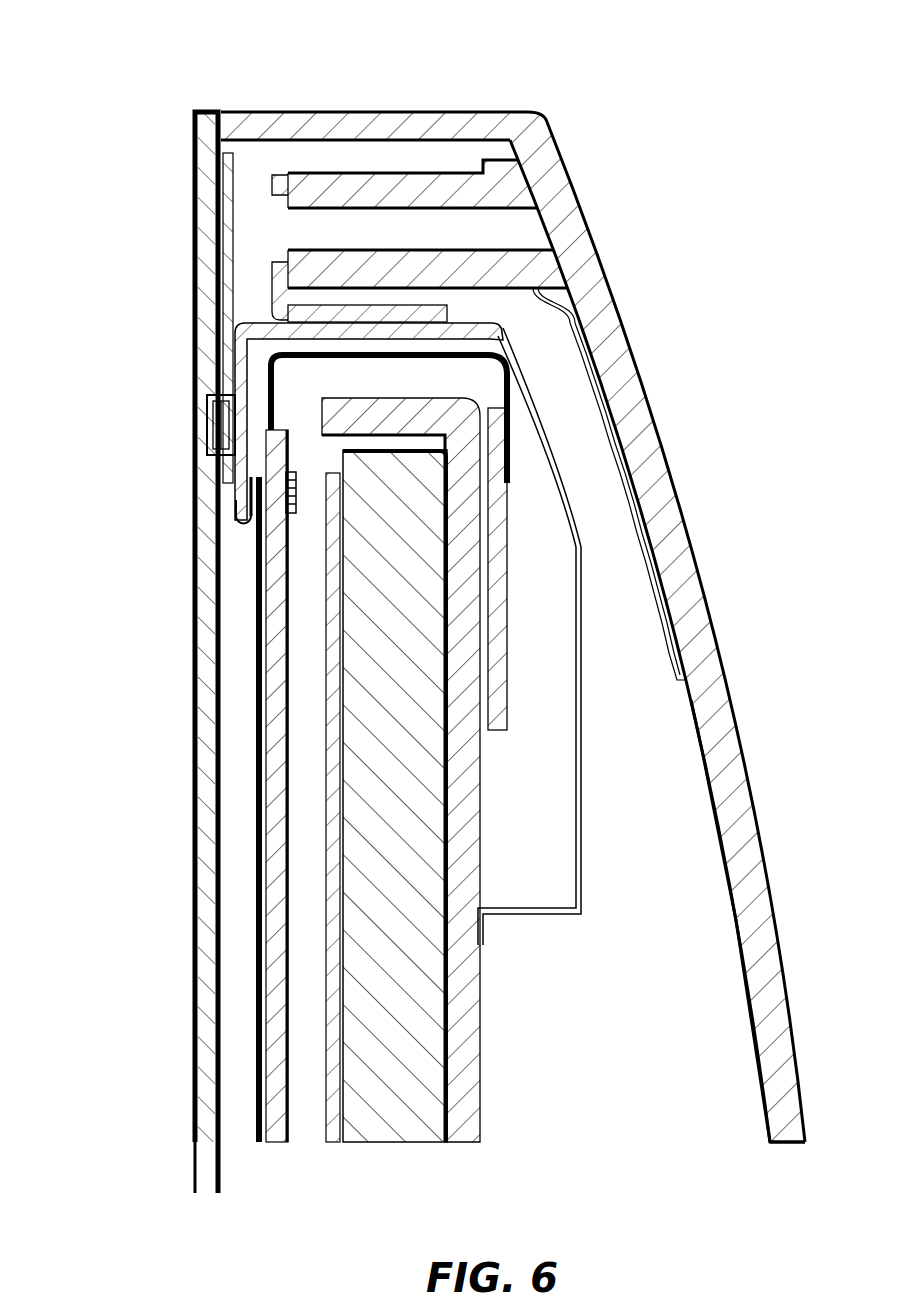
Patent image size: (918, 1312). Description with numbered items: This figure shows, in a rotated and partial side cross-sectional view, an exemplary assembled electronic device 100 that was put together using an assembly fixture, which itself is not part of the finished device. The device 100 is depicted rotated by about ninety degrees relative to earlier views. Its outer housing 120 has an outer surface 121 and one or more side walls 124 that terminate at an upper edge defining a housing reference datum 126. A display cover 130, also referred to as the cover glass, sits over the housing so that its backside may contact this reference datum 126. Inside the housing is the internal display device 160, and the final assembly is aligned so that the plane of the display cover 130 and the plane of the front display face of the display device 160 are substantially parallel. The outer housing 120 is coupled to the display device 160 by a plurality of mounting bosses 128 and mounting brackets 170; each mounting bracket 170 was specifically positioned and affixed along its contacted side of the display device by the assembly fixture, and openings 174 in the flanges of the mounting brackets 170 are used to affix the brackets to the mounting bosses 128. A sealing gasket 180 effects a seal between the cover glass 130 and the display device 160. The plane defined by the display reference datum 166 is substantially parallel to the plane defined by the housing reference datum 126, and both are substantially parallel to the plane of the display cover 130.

The electronic device 100 is at (436, 600).
The outer housing 120 is at (610, 338).
The outer surface 121 is at (750, 760).
The side wall 124 is at (365, 120).
The housing reference datum 126 is at (215, 108).
The mounting boss 128 is at (483, 187).
The display cover 130 is at (205, 188).
The display device 160 is at (535, 548).
The display reference datum 166 is at (237, 503).
The mounting bracket 170 is at (265, 270).
The opening 174 is at (268, 225).
The sealing gasket 180 is at (213, 425).